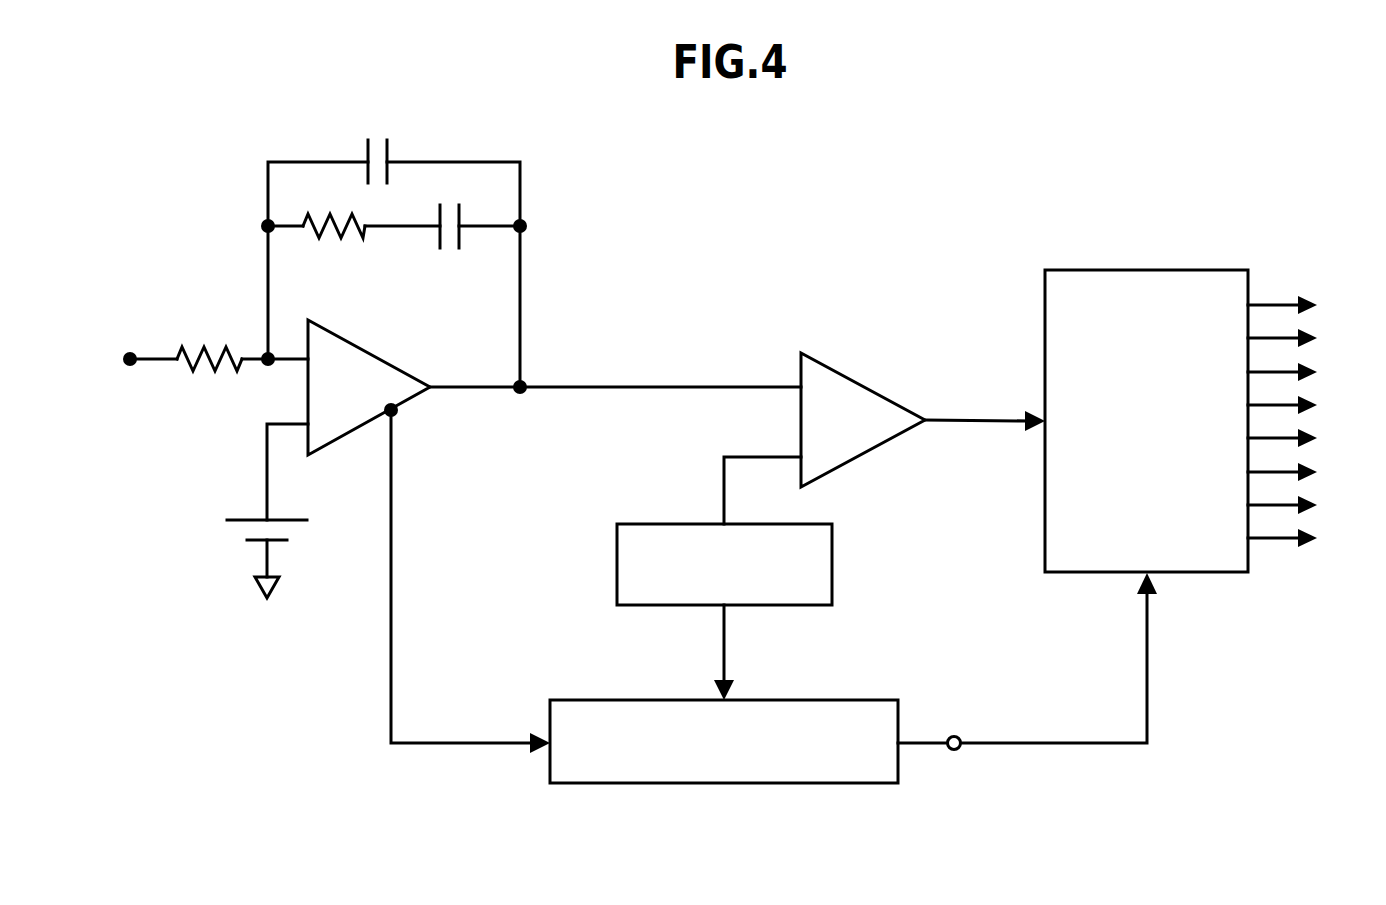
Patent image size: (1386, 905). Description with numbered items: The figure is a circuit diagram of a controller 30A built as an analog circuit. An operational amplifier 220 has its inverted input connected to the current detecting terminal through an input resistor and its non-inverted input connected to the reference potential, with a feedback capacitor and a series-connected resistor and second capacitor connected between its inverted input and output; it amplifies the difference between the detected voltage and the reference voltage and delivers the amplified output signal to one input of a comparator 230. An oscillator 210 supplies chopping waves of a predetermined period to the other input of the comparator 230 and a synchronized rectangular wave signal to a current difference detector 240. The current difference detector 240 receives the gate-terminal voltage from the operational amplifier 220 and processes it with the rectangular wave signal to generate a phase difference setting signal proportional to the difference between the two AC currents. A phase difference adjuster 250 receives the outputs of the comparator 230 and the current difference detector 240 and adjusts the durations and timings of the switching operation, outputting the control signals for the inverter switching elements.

The controller 30A is at (838, 199).
The oscillator 210 is at (663, 523).
The operational amplifier 220 is at (353, 342).
The comparator 230 is at (865, 385).
The current difference detector 240 is at (823, 700).
The phase difference adjuster 250 is at (1198, 268).